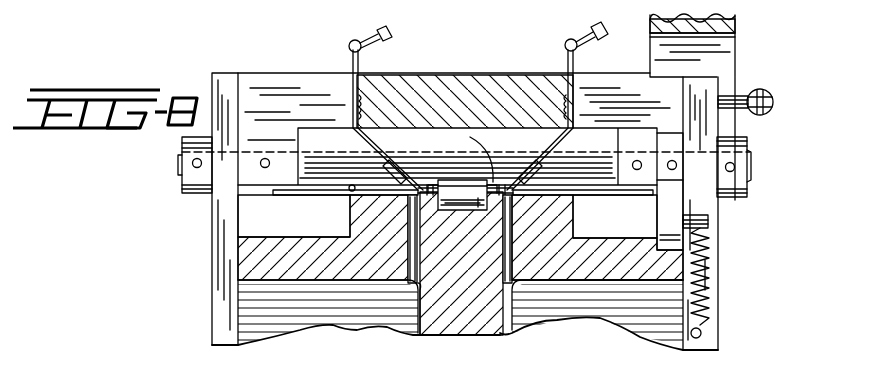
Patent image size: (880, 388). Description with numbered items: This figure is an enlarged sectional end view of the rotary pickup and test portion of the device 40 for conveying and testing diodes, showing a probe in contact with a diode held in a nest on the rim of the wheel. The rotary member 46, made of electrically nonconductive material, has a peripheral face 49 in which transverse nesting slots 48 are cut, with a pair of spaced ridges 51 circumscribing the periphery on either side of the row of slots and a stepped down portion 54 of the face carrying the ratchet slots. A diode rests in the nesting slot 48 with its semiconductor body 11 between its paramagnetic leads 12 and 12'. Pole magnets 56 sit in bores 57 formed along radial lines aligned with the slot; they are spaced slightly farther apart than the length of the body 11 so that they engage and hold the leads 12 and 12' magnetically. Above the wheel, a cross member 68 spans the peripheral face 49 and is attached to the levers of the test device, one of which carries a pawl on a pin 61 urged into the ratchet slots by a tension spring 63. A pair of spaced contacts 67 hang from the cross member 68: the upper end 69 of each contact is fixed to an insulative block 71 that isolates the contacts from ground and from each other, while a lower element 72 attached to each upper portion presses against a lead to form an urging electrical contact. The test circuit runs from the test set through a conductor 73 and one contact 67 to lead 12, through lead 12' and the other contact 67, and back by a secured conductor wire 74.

The semiconductor body 11 is at (452, 194).
The paramagnetic lead 12 is at (466, 155).
The paramagnetic lead 12' is at (598, 191).
The device for conveying and testing the articles 40 is at (734, 272).
The rotary member 46 is at (588, 272).
The nesting slot 48 is at (478, 208).
The peripheral face 49 is at (349, 190).
The ridge 51 is at (436, 180).
The stepped down portion 54 is at (237, 240).
The pole magnet 56 is at (410, 208).
The bore 57 is at (507, 284).
The pin 61 is at (749, 167).
The tension spring 63 is at (696, 261).
The contact 67 is at (347, 80).
The cross member 68 is at (246, 80).
The upper end 69 is at (348, 50).
The block 71 is at (472, 82).
The lower element 72 is at (398, 164).
The conductor 73 is at (388, 40).
The conductor wire 74 is at (600, 24).